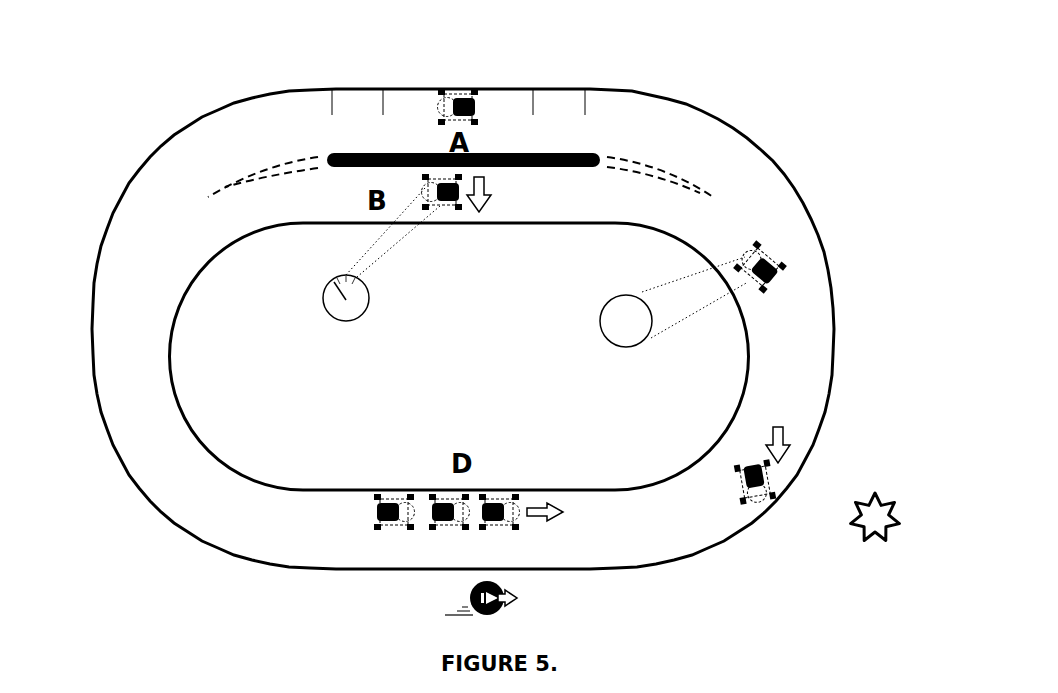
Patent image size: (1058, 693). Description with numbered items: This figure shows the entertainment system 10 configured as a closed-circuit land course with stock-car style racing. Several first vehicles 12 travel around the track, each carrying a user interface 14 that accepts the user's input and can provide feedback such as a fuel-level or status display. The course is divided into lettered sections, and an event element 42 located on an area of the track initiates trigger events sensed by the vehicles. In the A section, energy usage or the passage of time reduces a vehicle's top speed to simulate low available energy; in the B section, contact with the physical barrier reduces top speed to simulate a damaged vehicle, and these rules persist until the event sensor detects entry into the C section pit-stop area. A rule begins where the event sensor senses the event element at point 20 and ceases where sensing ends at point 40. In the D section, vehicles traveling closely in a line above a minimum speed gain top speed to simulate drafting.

The entertainment system 10 is at (208, 84).
The first vehicle 12 is at (781, 245).
The user interface 14 is at (377, 332).
The point 20 is at (691, 135).
The point 40 is at (222, 147).
The event element 42 is at (753, 532).